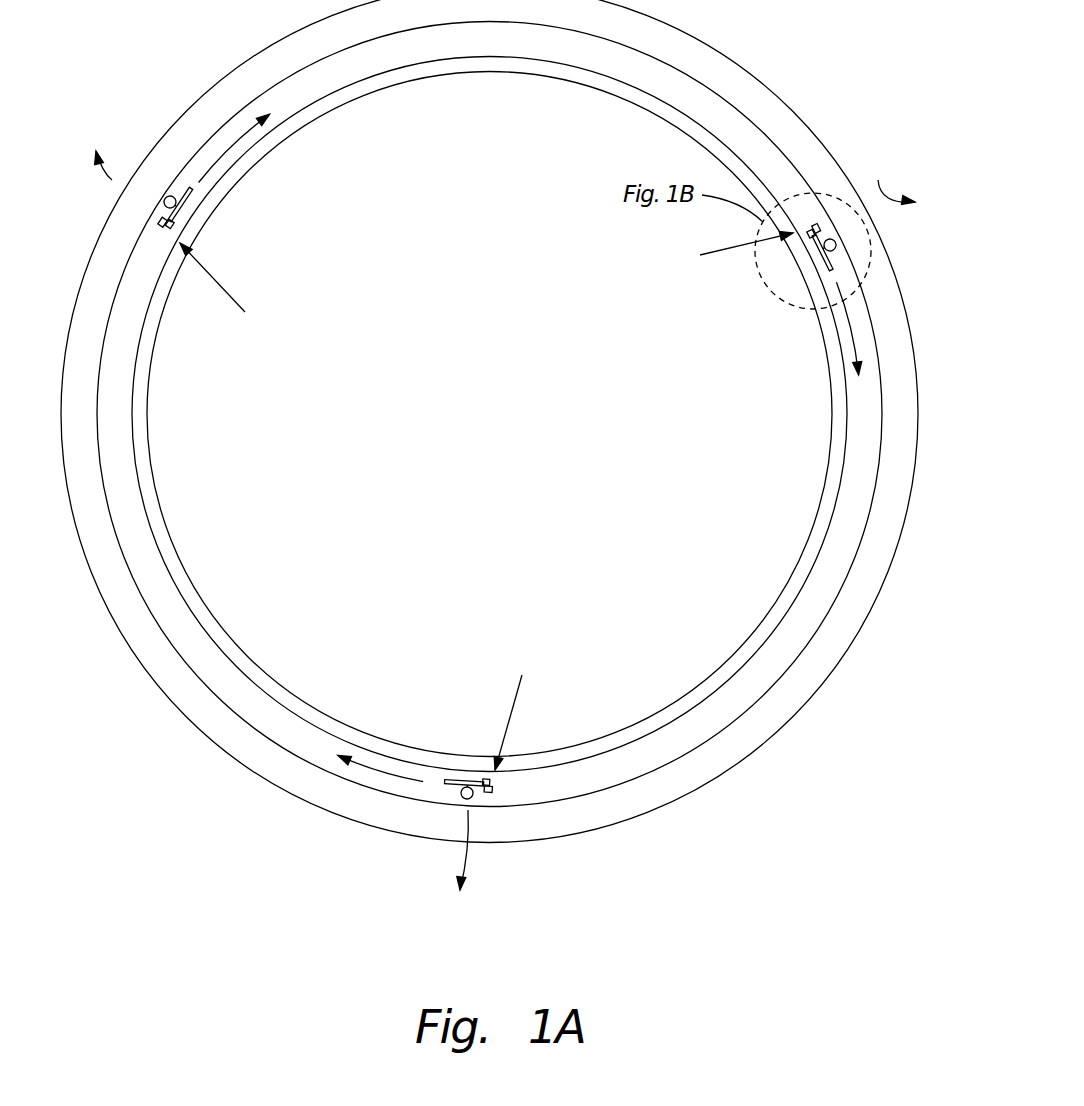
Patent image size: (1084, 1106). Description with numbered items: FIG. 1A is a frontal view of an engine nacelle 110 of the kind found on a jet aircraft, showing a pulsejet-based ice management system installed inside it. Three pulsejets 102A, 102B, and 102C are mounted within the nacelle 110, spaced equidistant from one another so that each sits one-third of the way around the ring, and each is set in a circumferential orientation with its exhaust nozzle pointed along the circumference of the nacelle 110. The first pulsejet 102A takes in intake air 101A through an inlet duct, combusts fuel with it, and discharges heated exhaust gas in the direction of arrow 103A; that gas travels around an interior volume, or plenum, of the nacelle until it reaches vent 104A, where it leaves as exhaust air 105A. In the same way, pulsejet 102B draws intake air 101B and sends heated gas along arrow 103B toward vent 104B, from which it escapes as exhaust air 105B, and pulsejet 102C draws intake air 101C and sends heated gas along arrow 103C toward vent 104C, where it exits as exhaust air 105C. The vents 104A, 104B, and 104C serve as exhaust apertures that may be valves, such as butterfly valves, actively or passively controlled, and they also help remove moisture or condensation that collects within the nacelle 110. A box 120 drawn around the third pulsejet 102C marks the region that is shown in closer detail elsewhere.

The engine nacelle 110 is at (215, 742).
The box 120 is at (867, 273).
The intake air 101A is at (512, 707).
The intake air 101B is at (227, 290).
The intake air 101C is at (720, 250).
The pulsejet 102A is at (455, 783).
The pulsejet 102B is at (184, 206).
The pulsejet 102C is at (820, 263).
The arrow 103A is at (380, 770).
The arrow 103B is at (233, 147).
The arrow 103C is at (850, 337).
The vent 104A is at (167, 195).
The vent 104B is at (837, 242).
The vent 104C is at (463, 800).
The exhaust air 105A is at (158, 198).
The exhaust air 105B is at (890, 178).
The exhaust air 105C is at (470, 860).